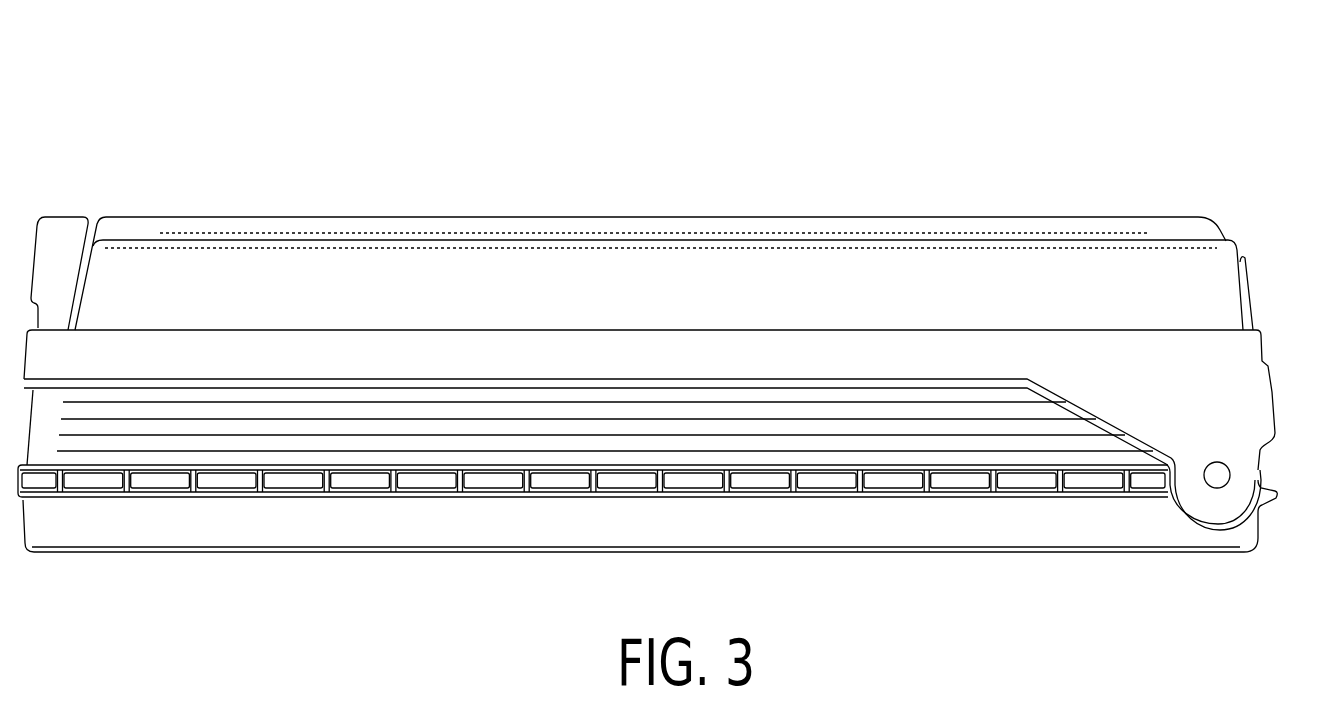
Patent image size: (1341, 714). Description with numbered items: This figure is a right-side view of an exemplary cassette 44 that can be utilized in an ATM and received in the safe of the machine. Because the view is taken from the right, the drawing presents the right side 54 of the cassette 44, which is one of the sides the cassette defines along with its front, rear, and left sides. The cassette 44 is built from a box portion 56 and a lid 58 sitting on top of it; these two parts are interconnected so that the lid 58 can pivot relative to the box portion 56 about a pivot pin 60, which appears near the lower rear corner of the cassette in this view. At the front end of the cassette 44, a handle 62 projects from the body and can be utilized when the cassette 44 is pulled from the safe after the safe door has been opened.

The cassette 44 is at (263, 121).
The right side 54 is at (657, 298).
The box portion 56 is at (360, 525).
The lid 58 is at (760, 222).
The pivot pin 60 is at (1217, 475).
The handle 62 is at (67, 227).